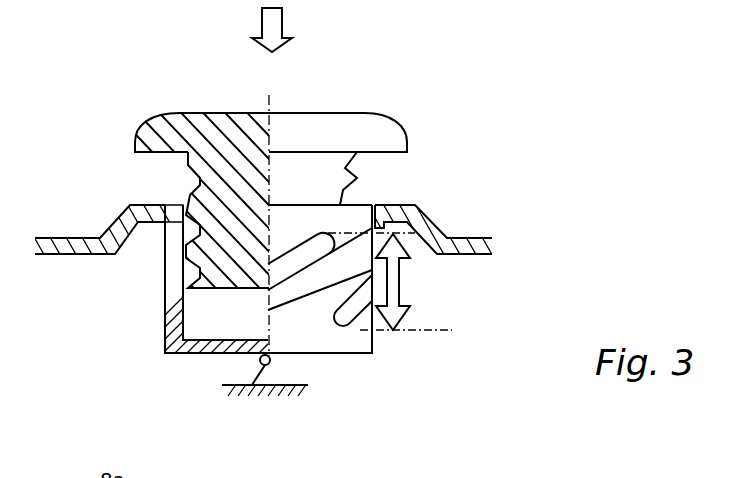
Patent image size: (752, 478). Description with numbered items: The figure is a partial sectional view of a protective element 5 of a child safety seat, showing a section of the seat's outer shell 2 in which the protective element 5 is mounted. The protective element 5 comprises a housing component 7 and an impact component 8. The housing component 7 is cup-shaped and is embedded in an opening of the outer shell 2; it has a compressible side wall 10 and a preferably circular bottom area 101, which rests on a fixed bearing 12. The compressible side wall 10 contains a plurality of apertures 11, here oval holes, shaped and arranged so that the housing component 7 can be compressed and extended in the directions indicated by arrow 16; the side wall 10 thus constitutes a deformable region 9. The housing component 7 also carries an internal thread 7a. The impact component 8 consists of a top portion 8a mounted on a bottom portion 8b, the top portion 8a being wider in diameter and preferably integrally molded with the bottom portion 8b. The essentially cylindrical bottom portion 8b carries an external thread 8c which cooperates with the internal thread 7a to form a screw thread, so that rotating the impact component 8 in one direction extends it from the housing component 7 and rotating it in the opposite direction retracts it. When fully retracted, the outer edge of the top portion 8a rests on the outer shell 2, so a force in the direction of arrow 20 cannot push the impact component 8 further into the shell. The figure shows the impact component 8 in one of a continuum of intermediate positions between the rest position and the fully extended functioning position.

The outer shell 2 is at (72, 250).
The protective element 5 is at (432, 85).
The housing component 7 is at (162, 288).
The internal thread 7a is at (165, 205).
The impact component 8 is at (267, 150).
The top portion 8a is at (312, 130).
The bottom portion 8b is at (318, 167).
The external thread 8c is at (352, 173).
The deformable region 9 is at (442, 293).
The compressible side wall 10 is at (320, 338).
The apertures 11 is at (345, 265).
The fixed bearing 12 is at (265, 390).
The arrow 16 is at (390, 316).
The arrow 20 is at (265, 23).
The bottom area 101 is at (192, 352).